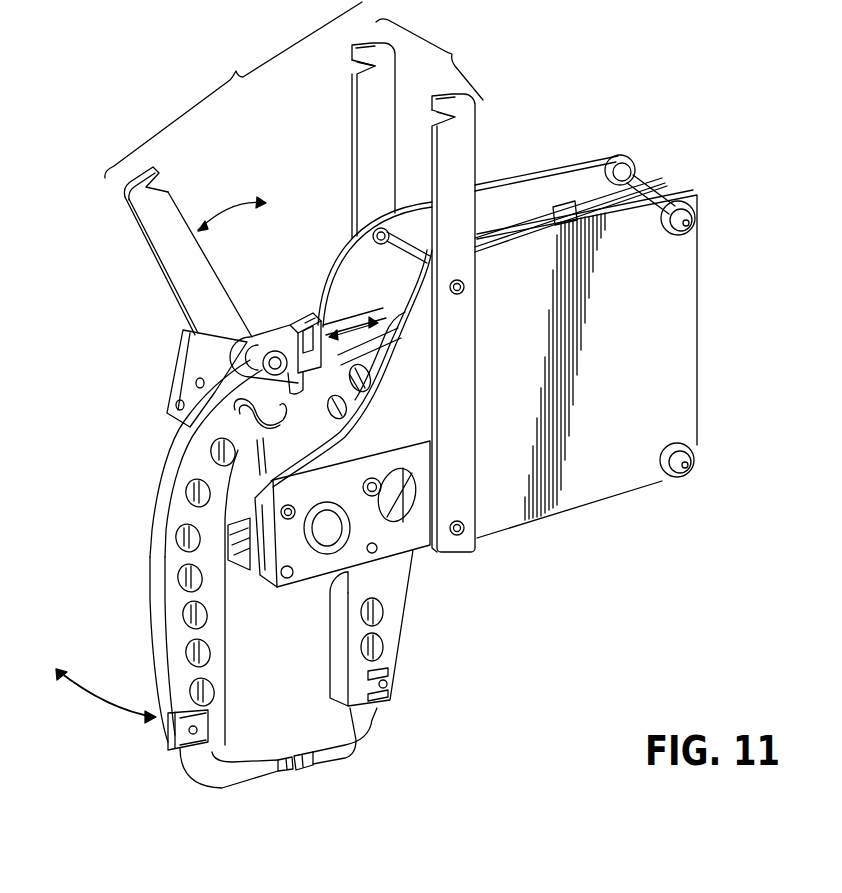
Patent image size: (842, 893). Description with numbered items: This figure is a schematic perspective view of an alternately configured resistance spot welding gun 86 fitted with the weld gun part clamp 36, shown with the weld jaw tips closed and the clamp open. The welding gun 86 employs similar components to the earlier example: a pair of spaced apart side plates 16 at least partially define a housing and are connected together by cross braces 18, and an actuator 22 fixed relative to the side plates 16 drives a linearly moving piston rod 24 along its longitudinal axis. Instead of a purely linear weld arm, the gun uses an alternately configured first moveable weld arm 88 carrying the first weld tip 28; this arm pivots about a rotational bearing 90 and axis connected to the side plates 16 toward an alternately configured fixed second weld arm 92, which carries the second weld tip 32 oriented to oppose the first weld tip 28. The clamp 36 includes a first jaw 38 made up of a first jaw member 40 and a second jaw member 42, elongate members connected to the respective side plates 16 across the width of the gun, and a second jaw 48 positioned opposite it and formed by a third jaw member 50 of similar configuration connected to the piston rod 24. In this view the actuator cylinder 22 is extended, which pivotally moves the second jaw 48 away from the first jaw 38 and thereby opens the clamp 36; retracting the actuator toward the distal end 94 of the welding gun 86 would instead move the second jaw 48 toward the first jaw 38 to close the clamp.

The side plates 16 is at (633, 152).
The cross braces 18 is at (657, 180).
The actuator 22 is at (522, 222).
The piston rod 24 is at (353, 317).
The first weld tip 28 is at (288, 768).
The second weld tip 32 is at (307, 768).
The weld gun part clamp 36 is at (233, 90).
The first jaw 38 is at (429, 59).
The first jaw member 40 is at (476, 150).
The second jaw member 42 is at (350, 93).
The second jaw 48 is at (130, 216).
The third jaw member 50 is at (168, 287).
The welding gun 86 is at (697, 392).
The first moveable weld arm 88 is at (155, 527).
The rotational bearing 90 is at (345, 523).
The second weld arm 92 is at (403, 627).
The distal end 94 is at (697, 250).